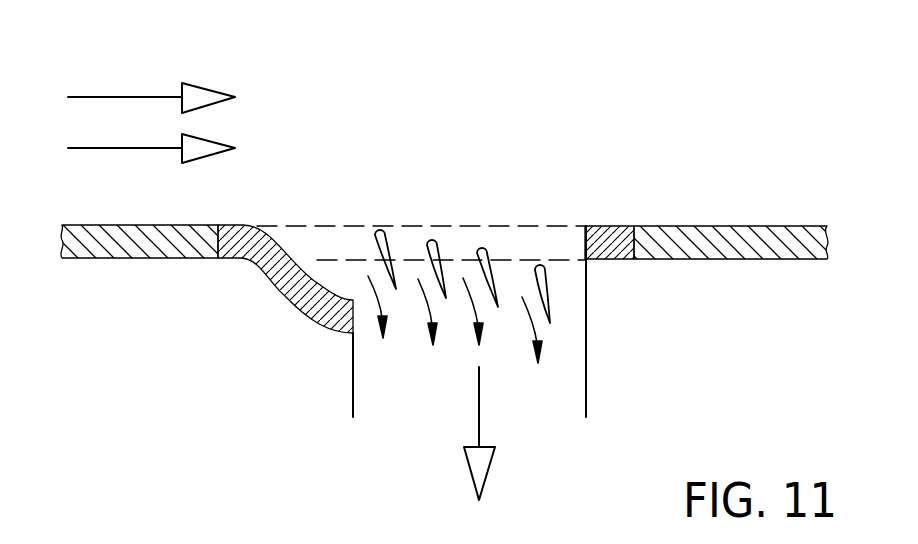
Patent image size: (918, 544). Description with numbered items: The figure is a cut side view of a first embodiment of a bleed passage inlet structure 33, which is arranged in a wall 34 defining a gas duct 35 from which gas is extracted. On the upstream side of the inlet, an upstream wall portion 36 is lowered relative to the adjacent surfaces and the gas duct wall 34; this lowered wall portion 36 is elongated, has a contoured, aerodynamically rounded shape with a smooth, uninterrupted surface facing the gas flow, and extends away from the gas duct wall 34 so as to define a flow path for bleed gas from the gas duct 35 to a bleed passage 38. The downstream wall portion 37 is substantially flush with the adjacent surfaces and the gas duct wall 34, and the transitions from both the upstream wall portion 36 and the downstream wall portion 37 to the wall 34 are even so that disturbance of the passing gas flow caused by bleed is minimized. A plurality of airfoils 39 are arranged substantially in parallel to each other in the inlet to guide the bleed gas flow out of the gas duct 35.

The bleed passage inlet structure 33 is at (465, 118).
The wall 34 is at (190, 225).
The gas duct 35 is at (168, 193).
The upstream wall portion 36 is at (273, 277).
The downstream wall portion 37 is at (600, 226).
The bleed passage 38 is at (555, 397).
The airfoils 39 is at (545, 288).